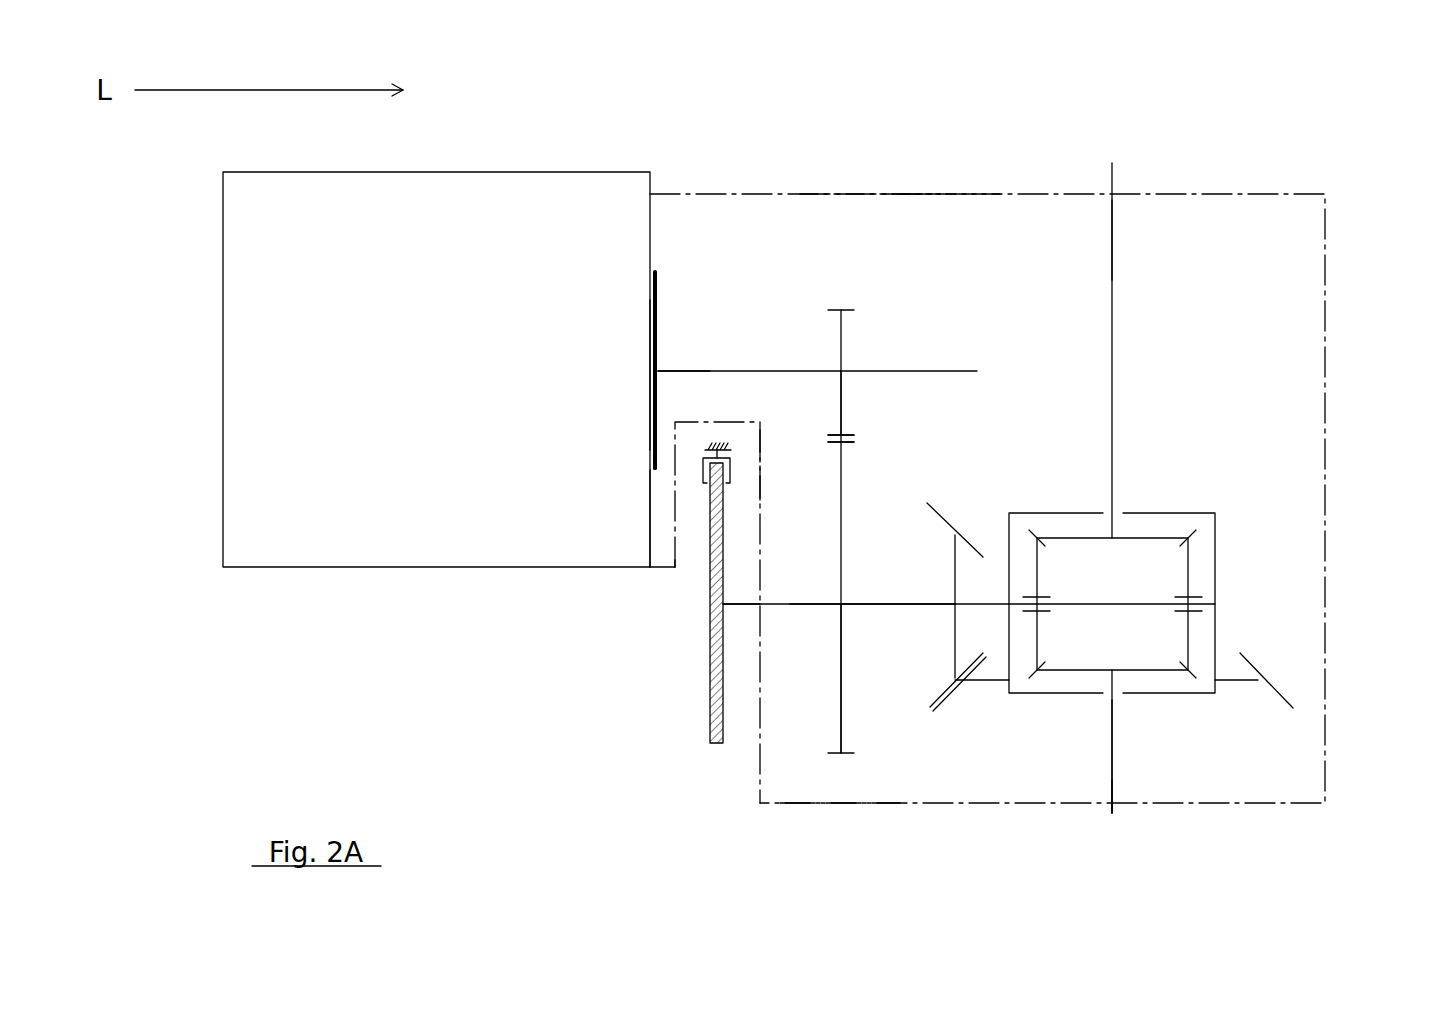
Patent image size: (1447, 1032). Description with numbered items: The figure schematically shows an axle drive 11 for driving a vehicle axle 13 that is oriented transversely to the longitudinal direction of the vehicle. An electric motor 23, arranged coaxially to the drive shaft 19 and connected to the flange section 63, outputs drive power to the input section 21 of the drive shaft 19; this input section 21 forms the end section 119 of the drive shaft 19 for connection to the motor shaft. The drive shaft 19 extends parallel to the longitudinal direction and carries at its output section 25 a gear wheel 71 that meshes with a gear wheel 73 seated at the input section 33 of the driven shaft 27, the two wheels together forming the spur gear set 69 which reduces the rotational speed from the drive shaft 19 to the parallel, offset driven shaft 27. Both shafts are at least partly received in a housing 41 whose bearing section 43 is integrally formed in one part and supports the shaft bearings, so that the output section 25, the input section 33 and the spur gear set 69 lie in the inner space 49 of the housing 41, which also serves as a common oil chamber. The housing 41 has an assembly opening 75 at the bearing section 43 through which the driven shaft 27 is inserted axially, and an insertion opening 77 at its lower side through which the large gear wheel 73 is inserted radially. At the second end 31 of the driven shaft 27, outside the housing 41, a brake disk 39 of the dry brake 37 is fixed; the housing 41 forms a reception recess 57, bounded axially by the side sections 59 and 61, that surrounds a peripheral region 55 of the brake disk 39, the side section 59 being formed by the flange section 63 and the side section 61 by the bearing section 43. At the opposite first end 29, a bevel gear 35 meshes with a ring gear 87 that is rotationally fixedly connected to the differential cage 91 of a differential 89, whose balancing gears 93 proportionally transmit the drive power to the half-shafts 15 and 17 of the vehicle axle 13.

The axle drive 11 is at (1350, 145).
The vehicle axle 13 is at (1107, 823).
The half-shaft 15 is at (1113, 230).
The half-shaft 17 is at (1113, 773).
The drive shaft 19 is at (784, 371).
The input section 21 is at (677, 371).
The electric motor 23 is at (426, 385).
The output section 25 is at (868, 368).
The driven shaft 27 is at (780, 605).
The first end 29 is at (920, 605).
The second end 31 is at (737, 605).
The input section 33 is at (817, 605).
The bevel gear 35 is at (955, 640).
The brake 37 is at (615, 694).
The brake disk 39 is at (710, 672).
The housing 41 is at (862, 194).
The bearing section 43 is at (950, 186).
The inner space 49 is at (1065, 168).
The peripheral region 55 is at (708, 548).
The reception recess 57 is at (687, 580).
The side section 59 is at (660, 528).
The side section 61 is at (757, 475).
The flange section 63 is at (650, 468).
The spur gear set 69 is at (916, 441).
The gear wheel 71 is at (842, 400).
The gear wheel 73 is at (841, 653).
The assembly opening 75 is at (626, 370).
The insertion opening 77 is at (834, 824).
The ring gear 87 is at (968, 692).
The differential 89 is at (1262, 586).
The differential cage 91 is at (1215, 626).
The balancing gears 93 is at (1082, 540).
The end section 119 is at (652, 260).